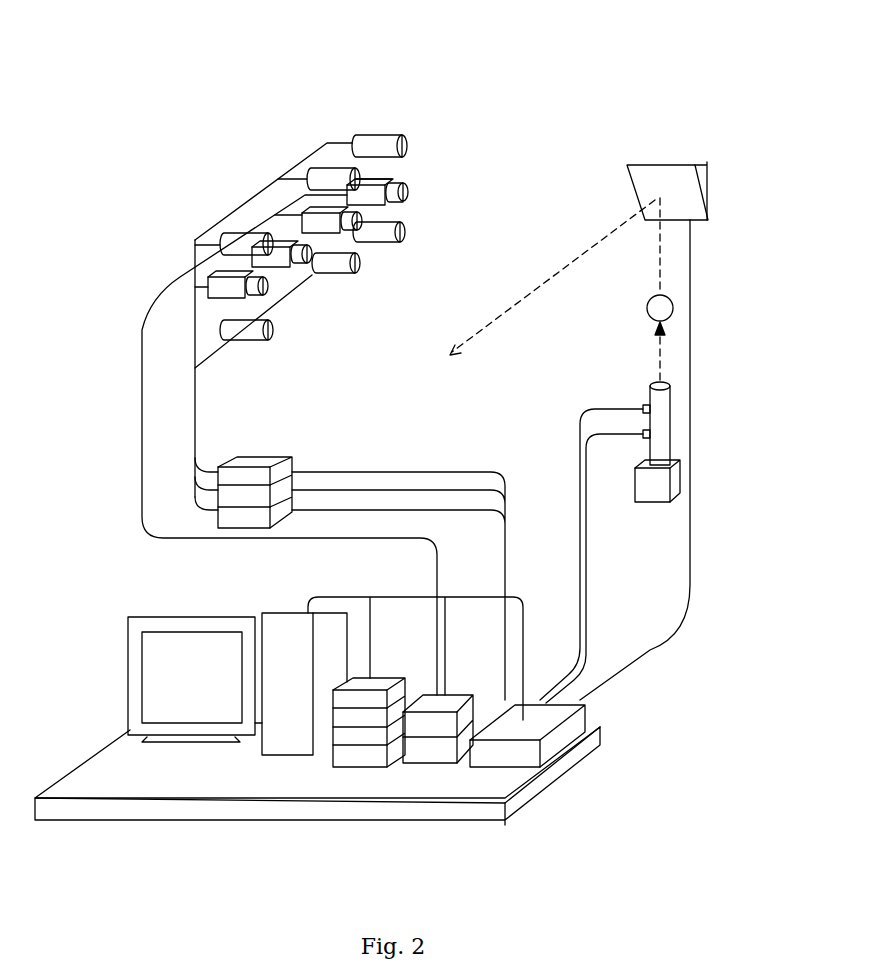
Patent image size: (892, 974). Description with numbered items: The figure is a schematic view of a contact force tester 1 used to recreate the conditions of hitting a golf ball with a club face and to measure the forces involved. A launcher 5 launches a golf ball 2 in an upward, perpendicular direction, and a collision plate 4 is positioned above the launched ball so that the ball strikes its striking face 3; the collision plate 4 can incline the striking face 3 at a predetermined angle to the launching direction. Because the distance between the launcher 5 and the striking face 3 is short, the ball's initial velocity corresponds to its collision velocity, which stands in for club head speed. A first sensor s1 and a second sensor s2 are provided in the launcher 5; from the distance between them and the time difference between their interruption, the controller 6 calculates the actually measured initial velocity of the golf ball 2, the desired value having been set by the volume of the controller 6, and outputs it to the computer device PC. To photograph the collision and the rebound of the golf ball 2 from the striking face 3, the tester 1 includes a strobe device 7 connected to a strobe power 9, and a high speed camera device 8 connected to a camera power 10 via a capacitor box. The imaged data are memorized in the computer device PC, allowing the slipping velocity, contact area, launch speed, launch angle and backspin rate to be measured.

The contact force tester 1 is at (518, 99).
The golf ball 2 is at (673, 308).
The striking face 3 is at (641, 188).
The collision plate 4 is at (660, 160).
The launcher 5 is at (670, 425).
The controller 6 is at (578, 722).
The strobe device 7 is at (372, 133).
The camera device 8 is at (408, 192).
The strobe power 9 is at (250, 458).
The camera power 10 is at (430, 752).
The computer device PC is at (277, 610).
The first sensor s1 is at (645, 408).
The second sensor s2 is at (645, 436).